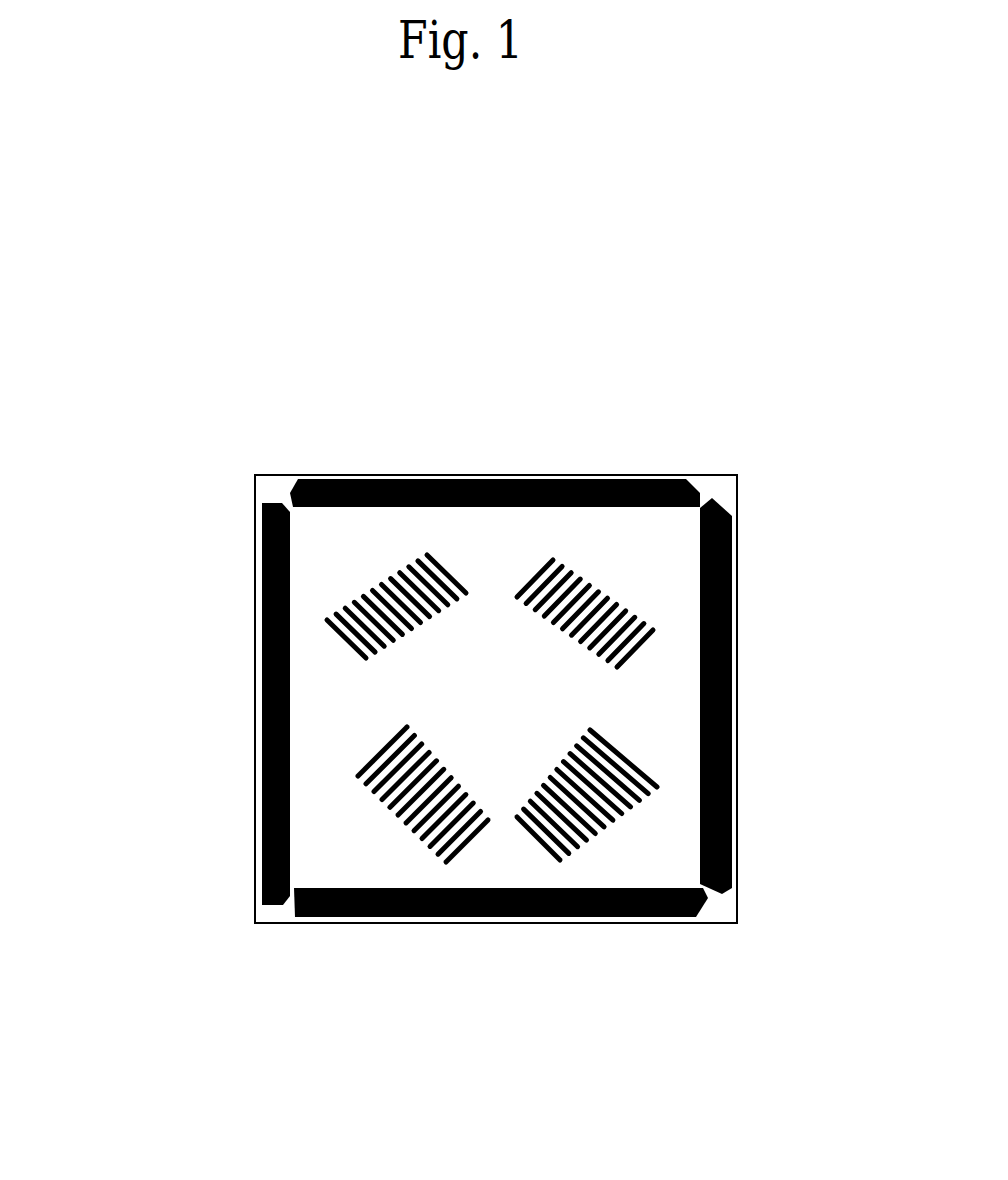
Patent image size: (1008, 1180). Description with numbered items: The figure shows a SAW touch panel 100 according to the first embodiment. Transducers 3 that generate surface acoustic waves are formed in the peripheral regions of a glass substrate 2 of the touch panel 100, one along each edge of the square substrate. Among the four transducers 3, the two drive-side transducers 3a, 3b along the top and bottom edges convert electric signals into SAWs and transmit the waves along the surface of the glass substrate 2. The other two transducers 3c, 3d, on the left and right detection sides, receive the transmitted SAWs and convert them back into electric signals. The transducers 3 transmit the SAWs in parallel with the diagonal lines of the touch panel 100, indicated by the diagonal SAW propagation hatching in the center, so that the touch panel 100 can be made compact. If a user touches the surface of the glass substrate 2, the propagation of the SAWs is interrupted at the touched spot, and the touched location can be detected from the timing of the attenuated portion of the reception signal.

The touch panel 100 is at (495, 285).
The glass substrate 2 is at (722, 484).
The transducers 3 is at (355, 476).
The transducer 3a is at (550, 478).
The transducer 3b is at (573, 915).
The transducer 3c is at (253, 757).
The transducer 3d is at (735, 758).